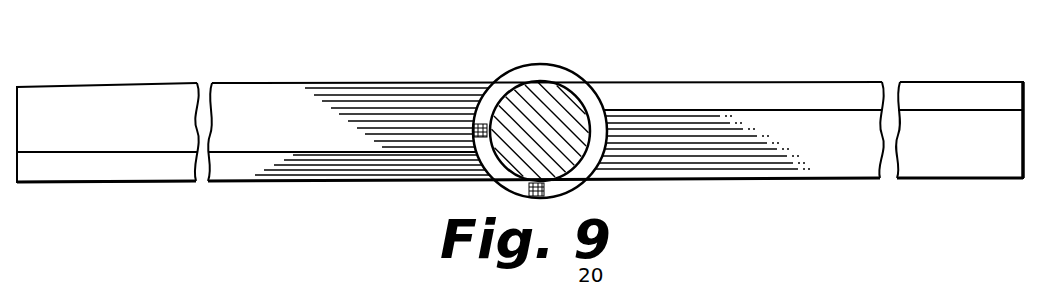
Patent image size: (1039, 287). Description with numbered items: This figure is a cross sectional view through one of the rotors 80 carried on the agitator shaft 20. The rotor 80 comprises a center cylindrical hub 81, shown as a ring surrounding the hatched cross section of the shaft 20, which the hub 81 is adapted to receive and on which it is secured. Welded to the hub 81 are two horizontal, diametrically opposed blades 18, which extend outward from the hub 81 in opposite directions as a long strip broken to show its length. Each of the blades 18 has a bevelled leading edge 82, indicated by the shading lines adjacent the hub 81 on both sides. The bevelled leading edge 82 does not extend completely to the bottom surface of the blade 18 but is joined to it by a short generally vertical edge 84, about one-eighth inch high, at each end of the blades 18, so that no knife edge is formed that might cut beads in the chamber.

The blade 18 is at (257, 100).
The agitator shaft 20 is at (530, 97).
The rotor 80 is at (423, 74).
The center cylindrical hub 81 is at (577, 78).
The bevelled leading edge 82 is at (303, 170).
The short generally vertical edge 84 is at (218, 183).